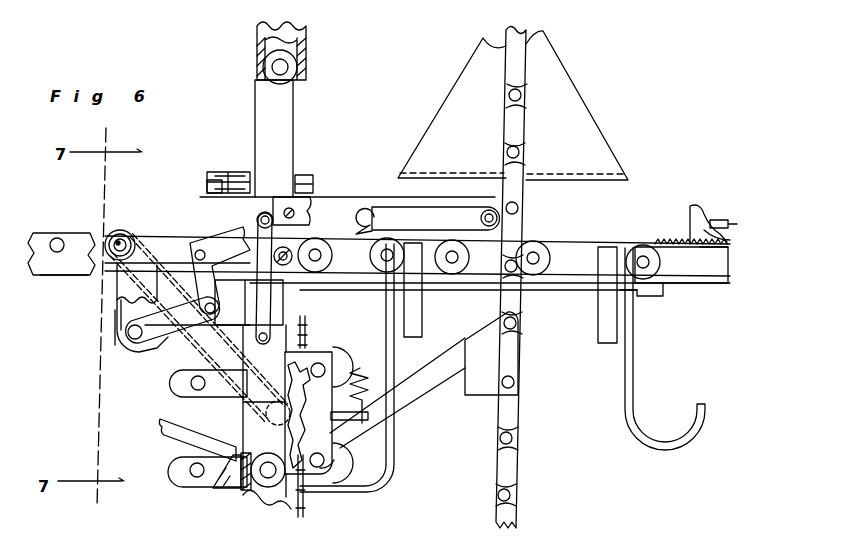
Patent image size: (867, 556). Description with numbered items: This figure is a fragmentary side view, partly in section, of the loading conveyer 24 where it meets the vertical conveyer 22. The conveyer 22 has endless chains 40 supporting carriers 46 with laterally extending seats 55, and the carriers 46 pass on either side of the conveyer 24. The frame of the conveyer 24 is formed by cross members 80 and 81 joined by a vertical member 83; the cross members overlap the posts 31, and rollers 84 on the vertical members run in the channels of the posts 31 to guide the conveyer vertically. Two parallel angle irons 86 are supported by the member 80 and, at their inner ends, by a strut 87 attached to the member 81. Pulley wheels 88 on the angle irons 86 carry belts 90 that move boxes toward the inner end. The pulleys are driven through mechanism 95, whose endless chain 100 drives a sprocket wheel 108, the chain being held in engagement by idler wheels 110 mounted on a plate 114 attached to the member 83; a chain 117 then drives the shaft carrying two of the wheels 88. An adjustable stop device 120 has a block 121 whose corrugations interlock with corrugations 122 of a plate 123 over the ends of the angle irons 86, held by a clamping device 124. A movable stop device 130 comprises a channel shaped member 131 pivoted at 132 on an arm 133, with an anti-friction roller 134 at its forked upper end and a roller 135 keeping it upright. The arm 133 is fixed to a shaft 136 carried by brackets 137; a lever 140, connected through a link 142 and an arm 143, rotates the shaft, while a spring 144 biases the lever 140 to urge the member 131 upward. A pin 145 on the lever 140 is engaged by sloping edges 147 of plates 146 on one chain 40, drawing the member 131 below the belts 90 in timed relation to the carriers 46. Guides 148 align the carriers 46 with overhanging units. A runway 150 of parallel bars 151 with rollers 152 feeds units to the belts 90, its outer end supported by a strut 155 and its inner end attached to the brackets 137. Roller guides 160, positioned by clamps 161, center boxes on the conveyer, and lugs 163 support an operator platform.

The conveyer 22 is at (525, 80).
The conveyer 24 is at (575, 441).
The posts 31 is at (257, 35).
The endless chains 40 is at (520, 103).
The carriers 46 is at (578, 125).
The seats 55 is at (618, 178).
The cross member 80 is at (200, 245).
The cross member 81 is at (235, 490).
The vertical member 83 is at (282, 118).
The rollers 84 is at (290, 63).
The angle irons 86 is at (697, 272).
The strut 87 is at (533, 308).
The pulley wheels 88 is at (535, 245).
The belts 90 is at (586, 242).
The mechanism 95 is at (322, 448).
The endless flexible chain 100 is at (301, 517).
The sprocket wheel 108 is at (292, 432).
The idler wheels 110 is at (336, 470).
The plate 114 is at (335, 448).
The chain 117 is at (120, 230).
The adjustable stop device 120 is at (700, 224).
The block 121 is at (718, 238).
The corrugations 122 is at (670, 240).
The plate 123 is at (728, 246).
The clamping device 124 is at (714, 226).
The movable stop device 130 is at (258, 218).
The channel shaped member 131 is at (266, 305).
The pivot 132 is at (266, 336).
The arm 133 is at (177, 338).
The anti-friction roller 134 is at (293, 180).
The roller 135 is at (287, 248).
The shaft 136 is at (115, 347).
The brackets 137 is at (118, 355).
The lever 140 is at (382, 212).
The link 142 is at (160, 250).
The arm 143 is at (148, 323).
The spring 144 is at (359, 367).
The pin 145 is at (486, 214).
The plates 146 is at (483, 384).
The sloping edges 147 is at (486, 325).
The guides 148 is at (632, 416).
The runway 150 is at (38, 232).
The parallel bars 151 is at (58, 262).
The rollers 152 is at (62, 238).
The strut 155 is at (190, 455).
The roller guides 160 is at (240, 170).
The clamps 161 is at (213, 180).
The lugs 163 is at (183, 385).